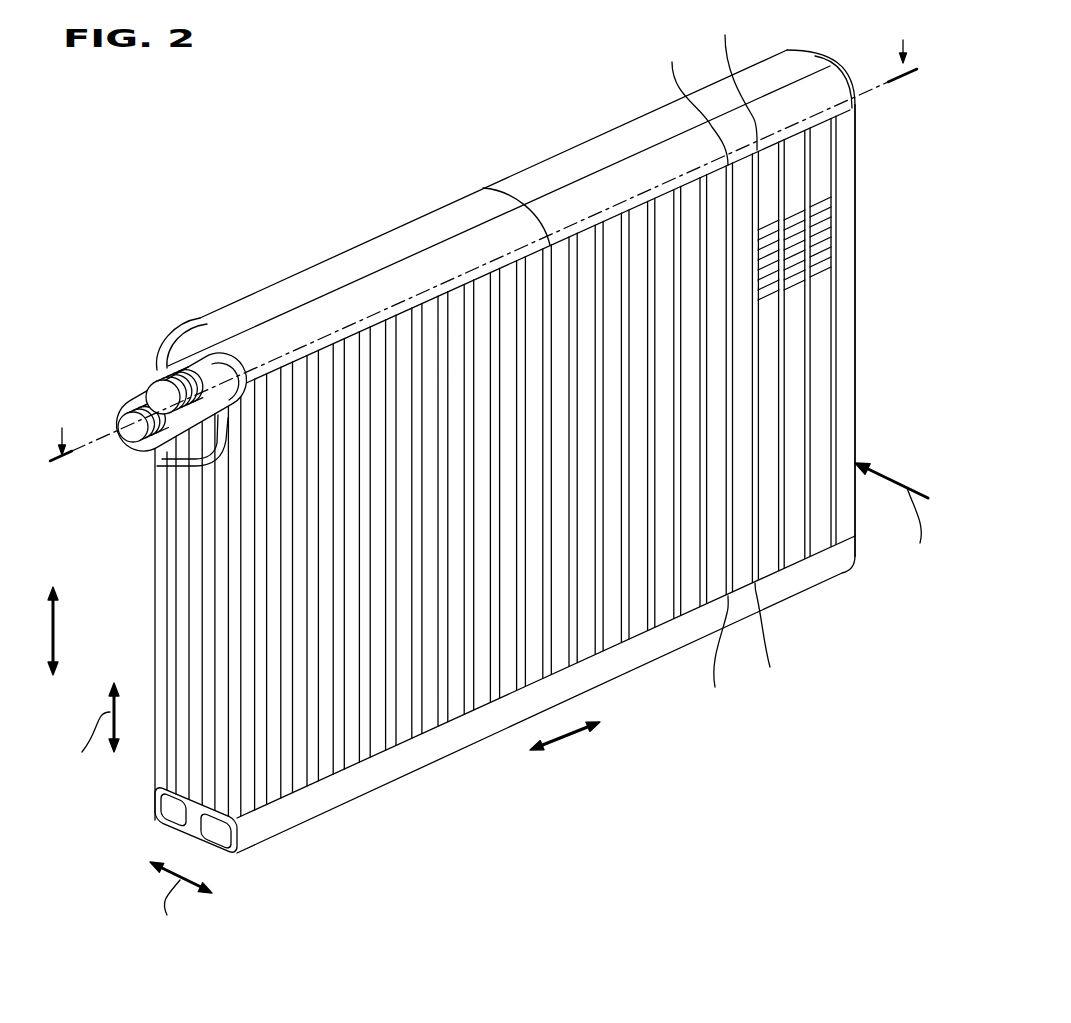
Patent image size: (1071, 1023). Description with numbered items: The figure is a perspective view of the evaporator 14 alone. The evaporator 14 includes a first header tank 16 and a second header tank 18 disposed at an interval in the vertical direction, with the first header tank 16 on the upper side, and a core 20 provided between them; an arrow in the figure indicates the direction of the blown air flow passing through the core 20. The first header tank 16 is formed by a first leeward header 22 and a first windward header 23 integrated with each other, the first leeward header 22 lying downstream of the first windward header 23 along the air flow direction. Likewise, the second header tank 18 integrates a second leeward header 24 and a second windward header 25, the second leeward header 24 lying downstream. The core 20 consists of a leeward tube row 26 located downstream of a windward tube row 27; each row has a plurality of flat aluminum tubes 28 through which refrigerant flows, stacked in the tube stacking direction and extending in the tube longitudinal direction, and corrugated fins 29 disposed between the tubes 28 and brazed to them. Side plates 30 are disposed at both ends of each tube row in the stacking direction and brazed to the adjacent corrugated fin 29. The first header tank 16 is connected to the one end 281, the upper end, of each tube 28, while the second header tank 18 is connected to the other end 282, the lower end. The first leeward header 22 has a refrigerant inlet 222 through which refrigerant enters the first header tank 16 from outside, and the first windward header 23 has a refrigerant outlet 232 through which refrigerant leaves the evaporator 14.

The evaporator 14 is at (262, 150).
The first header tank 16 is at (459, 258).
The second header tank 18 is at (470, 702).
The core 20 is at (866, 358).
The first leeward header 22 is at (390, 247).
The first windward header 23 is at (455, 262).
The second leeward header 24 is at (163, 810).
The second windward header 25 is at (223, 836).
The leeward tube row 26 is at (170, 568).
The windward tube row 27 is at (207, 633).
The tube 28 is at (835, 412).
The corrugated fin 29 is at (820, 274).
The side plate 30 is at (156, 513).
The refrigerant inlet 222 is at (122, 423).
The refrigerant outlet 232 is at (150, 392).
The one end of the tube 281 is at (703, 87).
The other end of the tube 282 is at (744, 649).